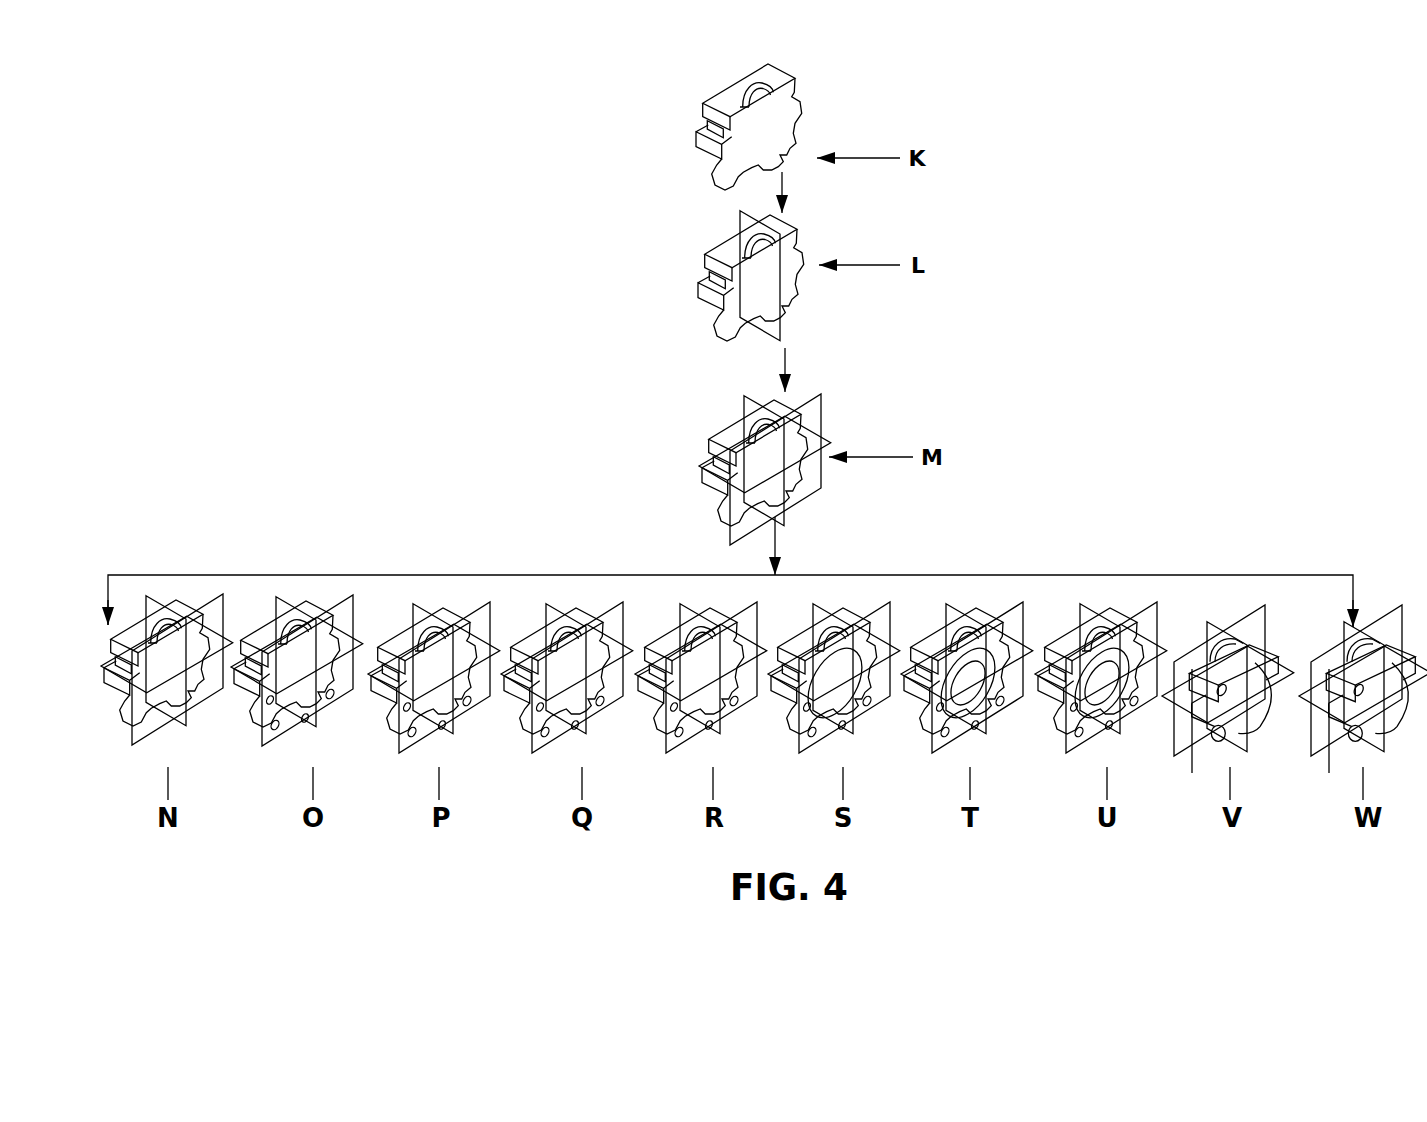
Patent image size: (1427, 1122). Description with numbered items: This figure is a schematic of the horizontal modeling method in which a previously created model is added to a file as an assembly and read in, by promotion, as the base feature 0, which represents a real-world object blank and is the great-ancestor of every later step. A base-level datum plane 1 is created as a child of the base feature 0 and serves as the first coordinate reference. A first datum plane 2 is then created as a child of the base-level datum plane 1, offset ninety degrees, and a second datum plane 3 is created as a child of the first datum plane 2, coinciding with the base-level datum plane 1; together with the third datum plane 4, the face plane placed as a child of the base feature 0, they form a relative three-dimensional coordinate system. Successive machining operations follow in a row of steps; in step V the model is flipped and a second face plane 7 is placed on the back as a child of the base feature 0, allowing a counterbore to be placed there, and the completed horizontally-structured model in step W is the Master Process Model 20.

The base feature 0 is at (824, 110).
The base-level datum plane 1 is at (788, 341).
The first datum plane 2 is at (740, 404).
The second datum plane 3 is at (690, 471).
The third datum plane 4 is at (722, 541).
The second face plane 7 is at (1260, 733).
The Master Process Model 20 is at (1380, 615).